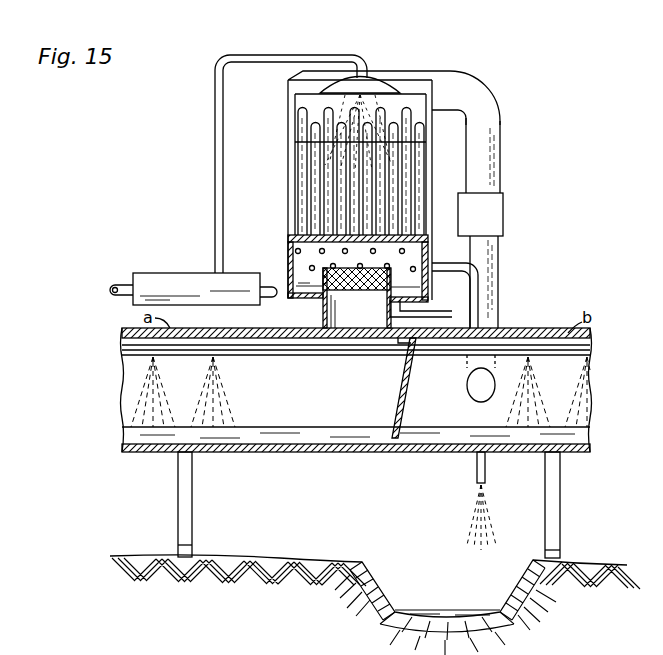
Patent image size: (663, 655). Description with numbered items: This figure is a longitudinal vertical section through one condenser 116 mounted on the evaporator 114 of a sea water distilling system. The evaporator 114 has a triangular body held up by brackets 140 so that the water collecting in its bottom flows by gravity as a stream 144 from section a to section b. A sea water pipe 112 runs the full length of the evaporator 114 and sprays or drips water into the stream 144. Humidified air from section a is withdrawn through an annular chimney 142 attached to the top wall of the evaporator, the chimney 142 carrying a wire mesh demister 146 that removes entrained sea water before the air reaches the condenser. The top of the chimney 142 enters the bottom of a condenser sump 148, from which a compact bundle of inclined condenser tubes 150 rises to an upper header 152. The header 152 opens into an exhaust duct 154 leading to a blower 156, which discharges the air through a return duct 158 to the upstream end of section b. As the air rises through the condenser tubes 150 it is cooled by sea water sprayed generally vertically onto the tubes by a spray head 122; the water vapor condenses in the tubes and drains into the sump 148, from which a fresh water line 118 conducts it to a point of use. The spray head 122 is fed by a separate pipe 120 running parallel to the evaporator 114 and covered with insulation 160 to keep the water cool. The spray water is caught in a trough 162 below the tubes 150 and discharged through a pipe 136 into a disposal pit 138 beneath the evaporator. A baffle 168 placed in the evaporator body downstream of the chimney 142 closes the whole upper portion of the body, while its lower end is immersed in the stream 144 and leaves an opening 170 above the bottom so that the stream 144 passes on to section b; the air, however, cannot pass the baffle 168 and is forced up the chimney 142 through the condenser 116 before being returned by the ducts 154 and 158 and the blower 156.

The condenser 116 is at (286, 41).
The spray head 122 is at (374, 80).
The header 152 is at (431, 62).
The exhaust duct 154 is at (501, 117).
The blower 156 is at (504, 215).
The return duct 158 is at (499, 262).
The pipe 136 is at (480, 309).
The condenser tubes 150 is at (300, 165).
The trough 162 is at (430, 180).
The condenser sump 148 is at (290, 250).
The wire mesh demister 146 is at (325, 276).
The annular chimney 142 is at (323, 318).
The fresh water line 118 is at (447, 310).
The evaporator 114 is at (548, 333).
The sea water pipe 112 is at (278, 351).
The stream 144 is at (300, 430).
The baffle 168 is at (399, 410).
The opening 170 is at (402, 455).
The brackets 140 is at (193, 506).
The disposal pit 138 is at (385, 573).
The insulation 160 is at (186, 278).
The pipe 120 is at (128, 284).